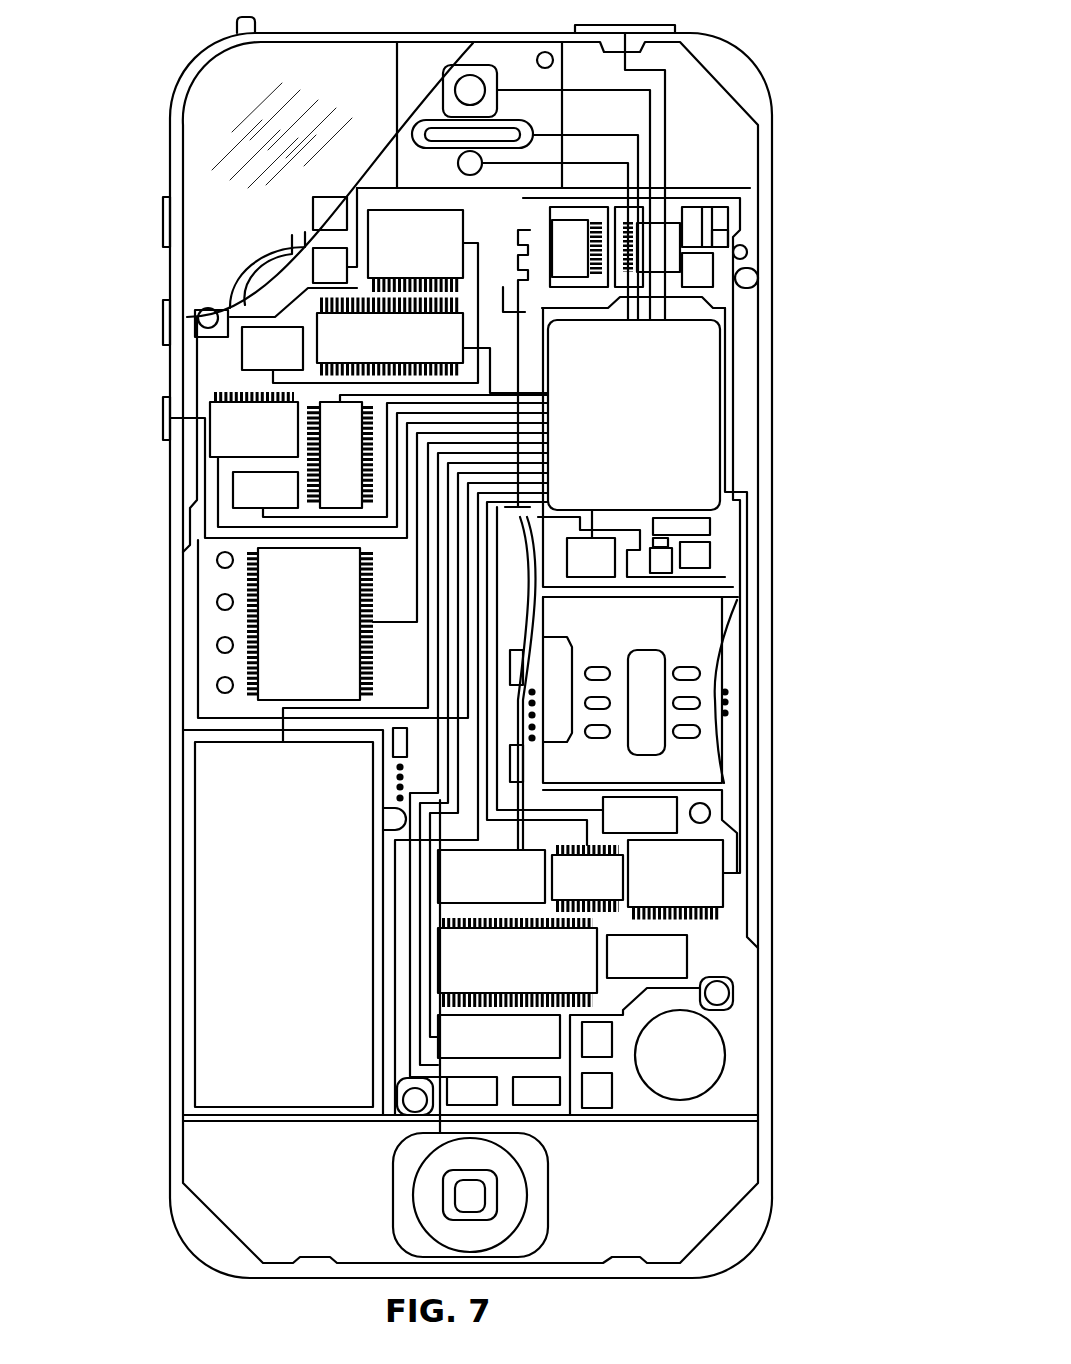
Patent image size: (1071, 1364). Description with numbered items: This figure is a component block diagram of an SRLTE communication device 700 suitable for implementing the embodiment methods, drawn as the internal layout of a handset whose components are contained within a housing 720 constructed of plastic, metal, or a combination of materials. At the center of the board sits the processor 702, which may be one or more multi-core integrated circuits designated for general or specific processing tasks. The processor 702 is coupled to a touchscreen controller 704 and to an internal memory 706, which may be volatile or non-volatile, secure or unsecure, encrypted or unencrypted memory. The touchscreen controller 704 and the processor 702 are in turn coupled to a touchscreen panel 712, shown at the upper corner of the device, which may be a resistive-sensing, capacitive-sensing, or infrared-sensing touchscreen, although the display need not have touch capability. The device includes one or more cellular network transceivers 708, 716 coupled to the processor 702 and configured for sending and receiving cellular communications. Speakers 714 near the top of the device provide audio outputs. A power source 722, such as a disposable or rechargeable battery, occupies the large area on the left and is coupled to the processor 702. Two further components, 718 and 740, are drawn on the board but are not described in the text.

The SRLTE communication device 700 is at (138, 70).
The processor 702 is at (634, 415).
The touchscreen controller 704 is at (415, 247).
The internal memory 706 is at (390, 337).
The cellular network transceiver 708 is at (672, 223).
The touchscreen panel 712 is at (198, 148).
The speakers 714 is at (430, 118).
The cellular network transceiver 716 is at (517, 961).
The integrated circuit 718 is at (499, 1036).
The housing 720 is at (768, 1128).
The power source 722 is at (284, 924).
The component 740 is at (715, 268).